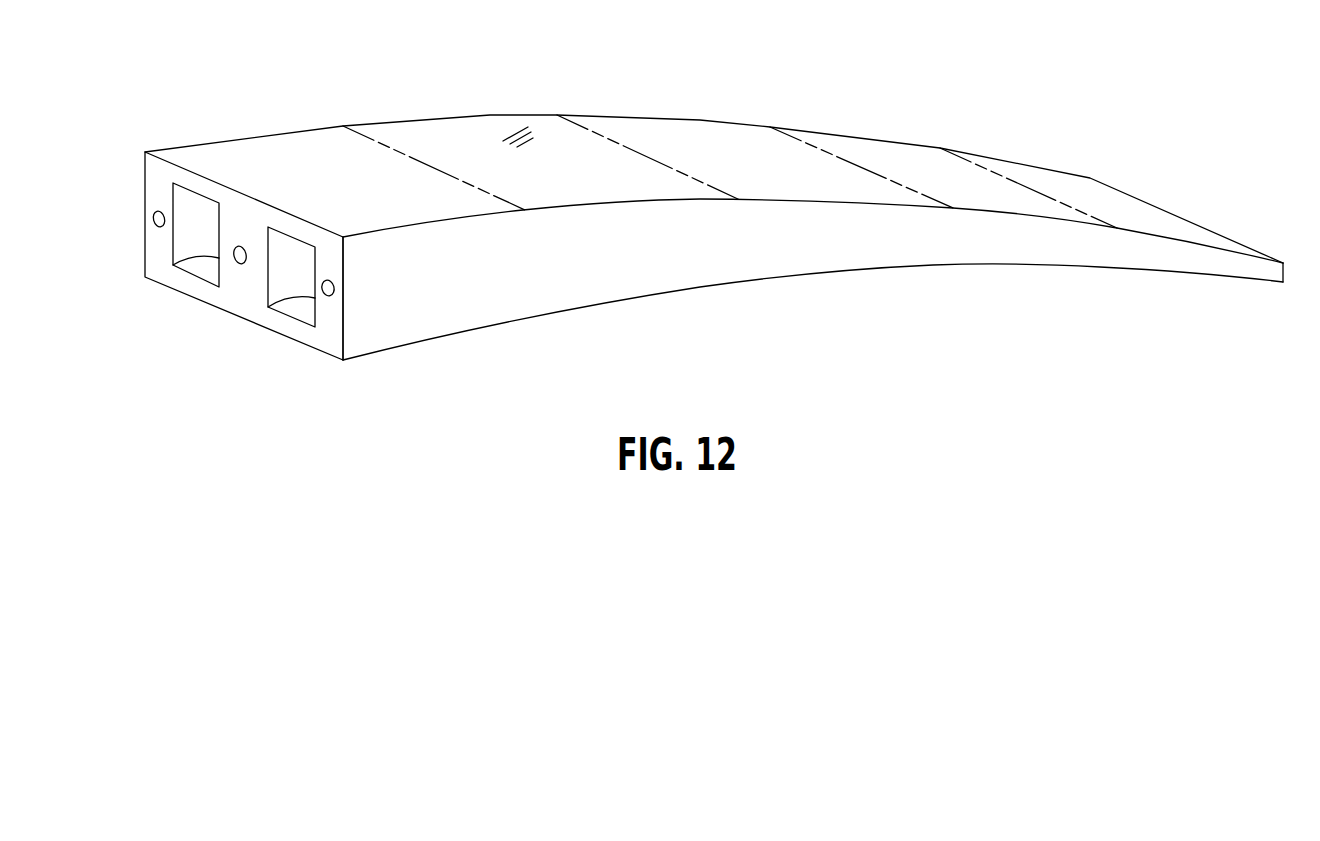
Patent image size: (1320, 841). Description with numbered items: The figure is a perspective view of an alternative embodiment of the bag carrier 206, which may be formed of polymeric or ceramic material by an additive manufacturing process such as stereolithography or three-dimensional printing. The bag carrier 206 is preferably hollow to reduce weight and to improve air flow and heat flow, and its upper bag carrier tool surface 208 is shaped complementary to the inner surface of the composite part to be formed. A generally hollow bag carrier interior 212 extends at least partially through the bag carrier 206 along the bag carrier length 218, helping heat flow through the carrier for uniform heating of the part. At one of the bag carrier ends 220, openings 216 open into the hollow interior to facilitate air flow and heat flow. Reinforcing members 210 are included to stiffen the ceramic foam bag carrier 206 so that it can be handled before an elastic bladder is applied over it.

The bag carrier 206 is at (292, 130).
The bag carrier tool surface 208 is at (513, 127).
The reinforcing members 210 is at (153, 220).
The bag carrier interior 212 is at (198, 232).
The openings 216 is at (285, 317).
The bag carrier length 218 is at (775, 278).
The bag carrier ends 220 is at (1285, 284).